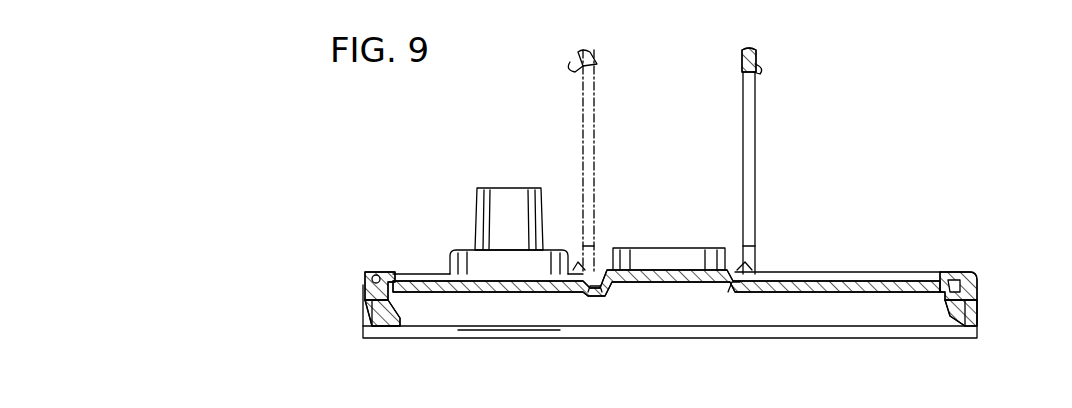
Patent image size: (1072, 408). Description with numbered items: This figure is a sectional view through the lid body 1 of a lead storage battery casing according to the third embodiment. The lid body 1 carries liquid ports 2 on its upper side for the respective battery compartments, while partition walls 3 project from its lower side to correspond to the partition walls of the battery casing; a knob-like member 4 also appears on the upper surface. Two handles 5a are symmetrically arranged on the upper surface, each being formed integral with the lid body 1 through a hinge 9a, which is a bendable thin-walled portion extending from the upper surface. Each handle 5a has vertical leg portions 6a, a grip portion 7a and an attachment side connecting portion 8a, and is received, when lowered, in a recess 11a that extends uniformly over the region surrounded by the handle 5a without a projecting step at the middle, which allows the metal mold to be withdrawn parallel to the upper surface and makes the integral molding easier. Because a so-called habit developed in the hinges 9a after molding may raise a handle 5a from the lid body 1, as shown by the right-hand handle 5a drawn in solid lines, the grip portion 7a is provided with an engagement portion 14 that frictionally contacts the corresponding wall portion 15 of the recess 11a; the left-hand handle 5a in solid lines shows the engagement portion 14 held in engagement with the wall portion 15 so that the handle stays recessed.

The lid body 1 is at (918, 262).
The liquid port 2 is at (659, 247).
The partition wall 3 is at (856, 320).
The knob 4 is at (474, 192).
The handle 5a is at (742, 103).
The vertical leg portion 6a is at (478, 270).
The grip portion 7a is at (363, 277).
The attachment side connecting portion 8a is at (583, 270).
The hinge 9a is at (733, 270).
The recess 11a is at (425, 288).
The engagement portion 14 is at (570, 66).
The wall portion 15 is at (382, 302).